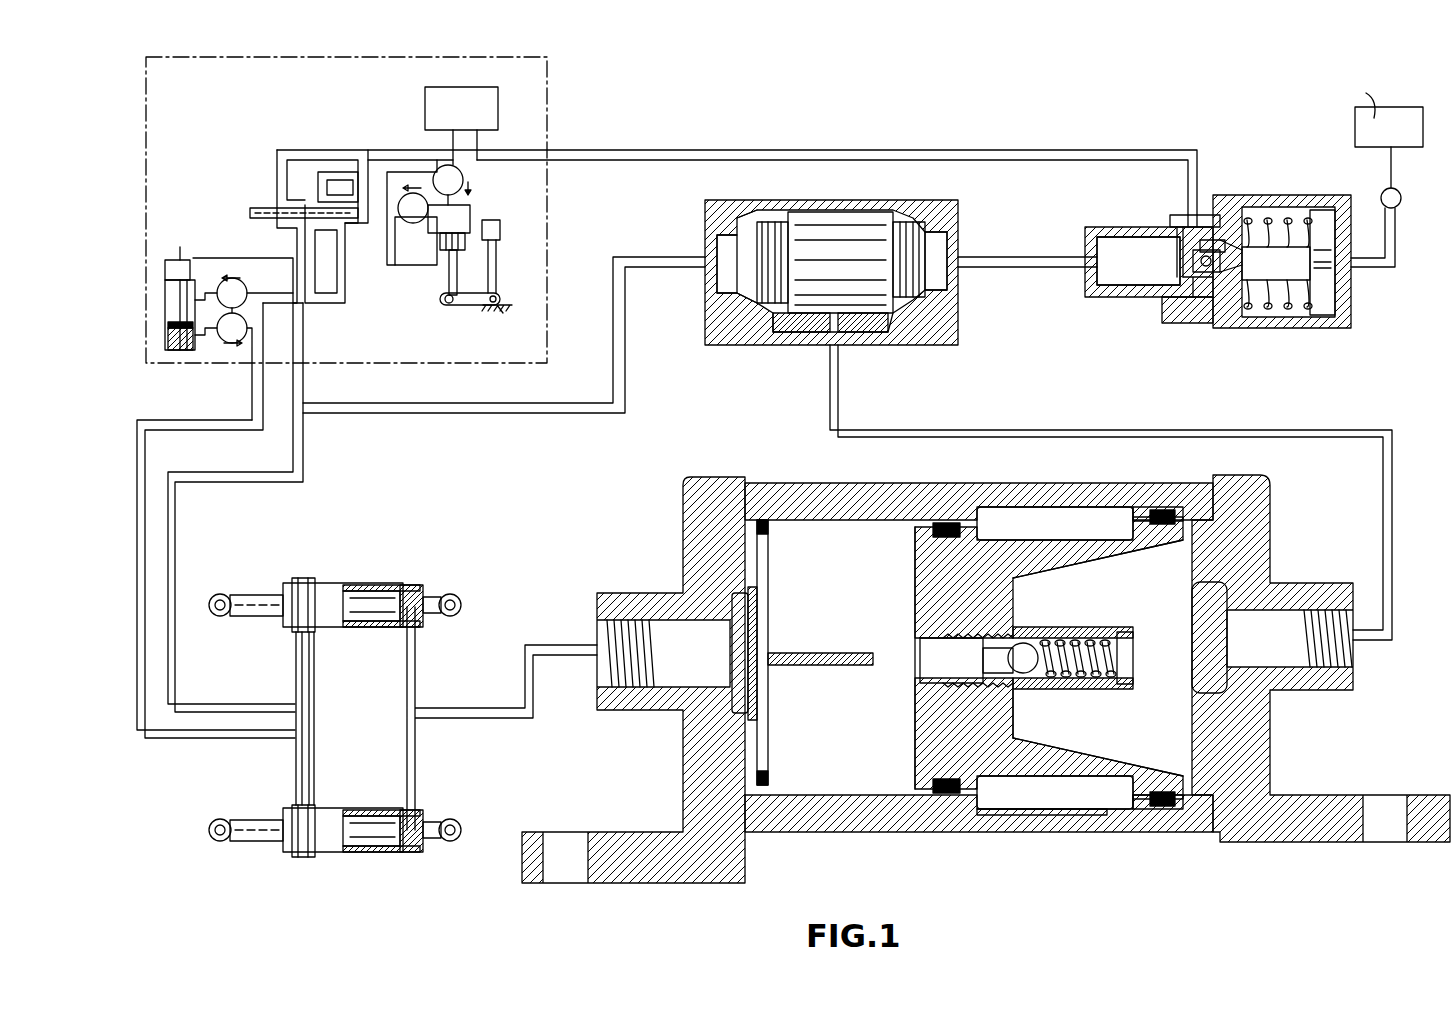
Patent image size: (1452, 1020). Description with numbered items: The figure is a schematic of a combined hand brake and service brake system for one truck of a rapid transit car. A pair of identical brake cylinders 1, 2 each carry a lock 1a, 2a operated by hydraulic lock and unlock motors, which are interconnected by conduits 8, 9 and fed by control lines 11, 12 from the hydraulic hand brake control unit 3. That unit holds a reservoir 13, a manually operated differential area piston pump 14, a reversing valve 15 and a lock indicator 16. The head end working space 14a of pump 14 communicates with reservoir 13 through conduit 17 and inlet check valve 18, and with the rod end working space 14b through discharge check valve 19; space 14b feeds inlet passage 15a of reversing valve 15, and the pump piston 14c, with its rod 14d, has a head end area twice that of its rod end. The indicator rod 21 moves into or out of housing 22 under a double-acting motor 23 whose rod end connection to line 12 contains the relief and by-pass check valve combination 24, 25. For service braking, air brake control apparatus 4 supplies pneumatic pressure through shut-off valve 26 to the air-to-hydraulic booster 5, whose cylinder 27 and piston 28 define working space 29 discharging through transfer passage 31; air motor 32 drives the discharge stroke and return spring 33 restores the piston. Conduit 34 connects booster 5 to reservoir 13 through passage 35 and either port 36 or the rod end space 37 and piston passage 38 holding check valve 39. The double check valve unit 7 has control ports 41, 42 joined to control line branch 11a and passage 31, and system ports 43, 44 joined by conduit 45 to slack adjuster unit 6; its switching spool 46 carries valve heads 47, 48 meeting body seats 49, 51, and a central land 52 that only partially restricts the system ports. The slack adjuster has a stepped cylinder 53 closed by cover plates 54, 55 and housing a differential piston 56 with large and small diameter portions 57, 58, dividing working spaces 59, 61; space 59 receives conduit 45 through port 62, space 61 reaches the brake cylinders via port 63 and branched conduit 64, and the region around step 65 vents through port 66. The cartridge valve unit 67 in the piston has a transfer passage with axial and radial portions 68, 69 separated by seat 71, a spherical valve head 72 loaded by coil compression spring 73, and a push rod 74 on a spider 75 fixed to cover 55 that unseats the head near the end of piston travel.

The brake cylinder 1 is at (348, 583).
The lock 1a is at (305, 578).
The brake cylinder 2 is at (330, 808).
The lock 2a is at (312, 860).
The hydraulic hand brake control unit 3 is at (549, 193).
The air brake control apparatus 4 is at (1355, 132).
The air-to-hydraulic booster 5 is at (1264, 182).
The double-acting hydraulic slack adjuster unit 6 is at (1078, 470).
The double check valve unit 7 is at (935, 352).
The conduit 8 is at (295, 665).
The conduit 9 is at (315, 670).
The control line 11 is at (242, 482).
The control line branch 11a is at (563, 403).
The control line 12 is at (202, 420).
The reservoir 13 is at (425, 103).
The differential area piston pump 14 is at (488, 190).
The head end working space 14a is at (465, 216).
The rod end working space 14b is at (465, 272).
The pump piston 14c is at (465, 243).
The pump lever 14d is at (495, 293).
The reversing valve 15 is at (268, 188).
The inlet passage 15a is at (330, 172).
The lock indicator 16 is at (160, 268).
The conduit 17 is at (453, 143).
The inlet check valve 18 is at (466, 176).
The discharge check valve 19 is at (420, 223).
The rod 21 is at (168, 340).
The housing 22 is at (168, 325).
The double-acting motor 23 is at (176, 260).
The relief valve 24 is at (243, 290).
The by-pass check valve 25 is at (236, 345).
The shut-off valve 26 is at (1382, 192).
The cylinder 27 is at (1140, 227).
The pump piston 28 is at (1175, 323).
The working space 29 is at (1128, 268).
The transfer passage 31 is at (1030, 257).
The air motor 32 is at (1322, 328).
The return spring 33 is at (1270, 220).
The conduit 34 is at (1012, 150).
The passage 35 is at (1185, 215).
The port 36 is at (1193, 255).
The rod end space 37 is at (1226, 272).
The passage 38 is at (1210, 280).
The check valve 39 is at (1198, 215).
The control port 41 is at (706, 257).
The control port 42 is at (945, 250).
The system port 43 is at (778, 332).
The system port 44 is at (890, 332).
The conduit 45 is at (1045, 430).
The switching spool 46 is at (748, 240).
The valve head 47 is at (770, 222).
The valve head 48 is at (910, 222).
The body seat 49 is at (764, 222).
The body seat 51 is at (928, 225).
The central land 52 is at (845, 212).
The stepped cylinder 53 is at (832, 832).
The cover plate 54 is at (1270, 775).
The cover plate 55 is at (683, 755).
The differential area reciprocable piston 56 is at (1022, 525).
The large diameter portion 57 is at (1170, 510).
The small diameter portion 58 is at (946, 522).
The working space 59 is at (1210, 606).
The working space 61 is at (858, 598).
The port 62 is at (1353, 690).
The port 63 is at (607, 624).
The branched conduit 64 is at (500, 708).
The step 65 is at (1025, 568).
The port 66 is at (985, 818).
The cartridge type valve unit 67 is at (1023, 703).
The axial portion 68 is at (913, 650).
The radial portion 69 is at (1035, 628).
The seat 71 is at (1030, 672).
The spherical valve head 72 is at (1000, 660).
The coil compression spring 73 is at (1100, 690).
The push rod 74 is at (826, 665).
The spider 75 is at (748, 658).